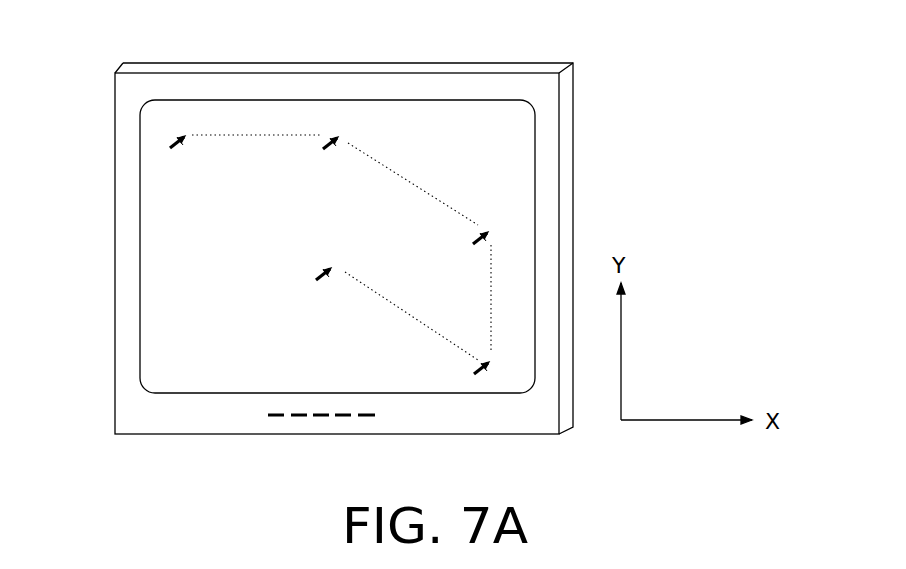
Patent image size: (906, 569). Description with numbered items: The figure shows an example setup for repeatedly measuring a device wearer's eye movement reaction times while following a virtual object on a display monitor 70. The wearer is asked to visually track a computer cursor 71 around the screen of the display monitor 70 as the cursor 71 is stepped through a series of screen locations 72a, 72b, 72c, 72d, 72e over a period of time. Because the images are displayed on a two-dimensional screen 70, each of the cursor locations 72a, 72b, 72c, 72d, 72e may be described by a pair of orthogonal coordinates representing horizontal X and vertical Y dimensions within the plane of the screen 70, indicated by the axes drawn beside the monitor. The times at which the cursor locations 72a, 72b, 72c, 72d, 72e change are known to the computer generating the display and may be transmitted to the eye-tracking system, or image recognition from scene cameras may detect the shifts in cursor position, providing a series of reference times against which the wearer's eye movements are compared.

The display monitor 70 is at (205, 441).
The computer cursor 71 is at (186, 147).
The screen location 72a is at (189, 131).
The screen location 72b is at (338, 128).
The screen location 72c is at (497, 224).
The screen location 72d is at (495, 377).
The screen location 72e is at (333, 264).